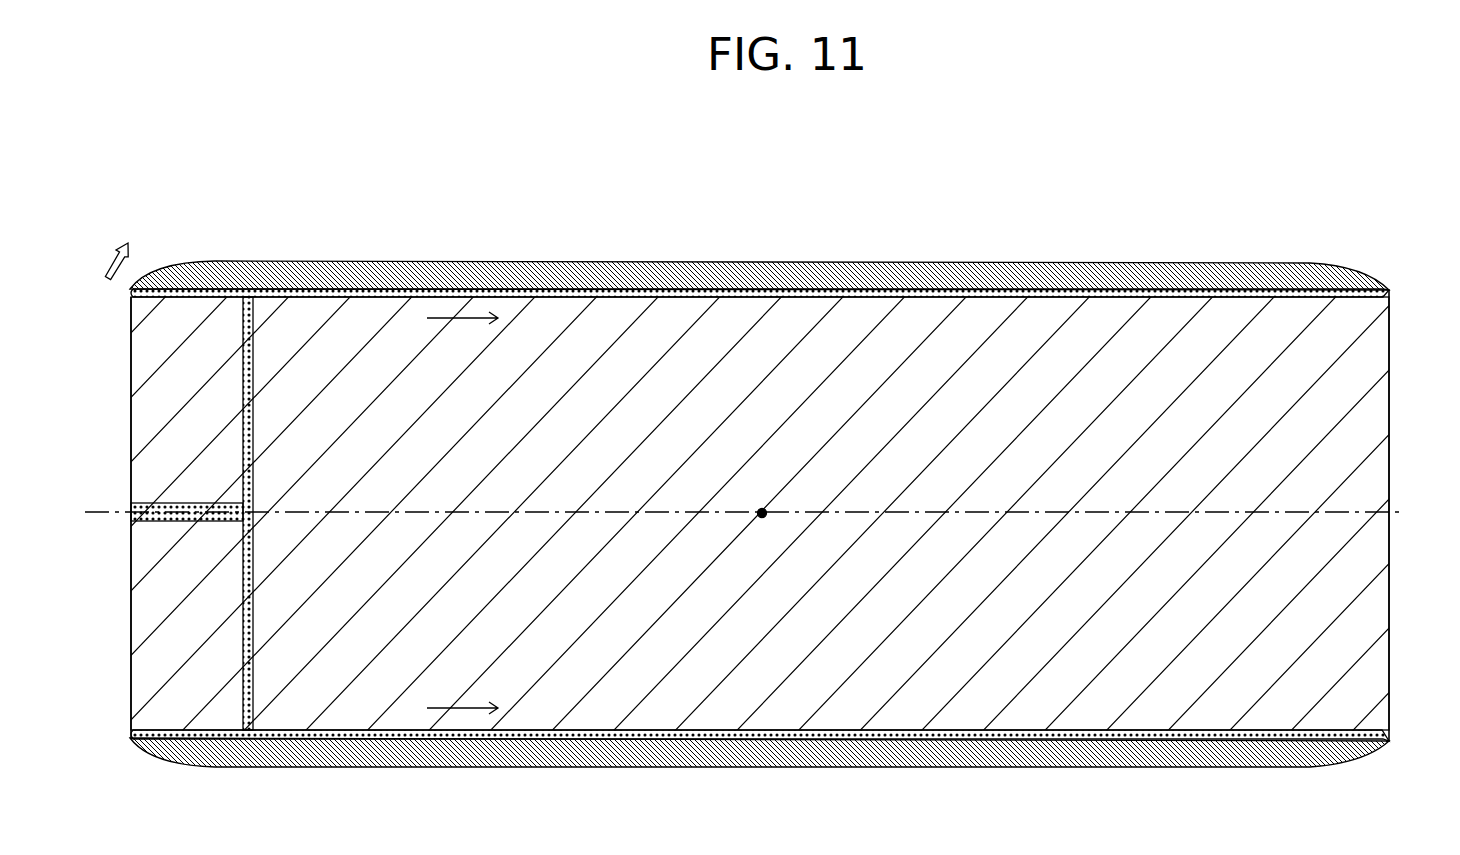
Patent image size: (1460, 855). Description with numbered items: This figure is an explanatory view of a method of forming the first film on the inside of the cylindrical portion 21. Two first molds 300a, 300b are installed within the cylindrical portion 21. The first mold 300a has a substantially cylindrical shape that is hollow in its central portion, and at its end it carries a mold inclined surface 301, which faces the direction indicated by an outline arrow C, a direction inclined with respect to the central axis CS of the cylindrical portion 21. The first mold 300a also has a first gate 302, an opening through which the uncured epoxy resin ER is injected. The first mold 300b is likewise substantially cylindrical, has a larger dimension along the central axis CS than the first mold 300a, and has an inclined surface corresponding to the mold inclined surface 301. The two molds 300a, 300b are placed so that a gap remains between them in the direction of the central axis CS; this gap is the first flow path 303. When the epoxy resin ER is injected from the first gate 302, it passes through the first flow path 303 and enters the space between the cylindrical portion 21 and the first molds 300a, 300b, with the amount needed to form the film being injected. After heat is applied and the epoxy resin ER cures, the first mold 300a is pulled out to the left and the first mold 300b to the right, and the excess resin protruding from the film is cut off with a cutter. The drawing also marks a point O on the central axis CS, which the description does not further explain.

The cylindrical portion 21 is at (1225, 265).
The mold inclined surface 301 is at (133, 290).
The first gate 302 is at (131, 515).
The first flow path 303 is at (250, 343).
The first mold 300a is at (148, 672).
The first mold 300b is at (1360, 428).
The central axis CS is at (764, 516).
The center point O is at (762, 512).
The epoxy resin ER is at (434, 292).
The outline arrow C is at (112, 276).